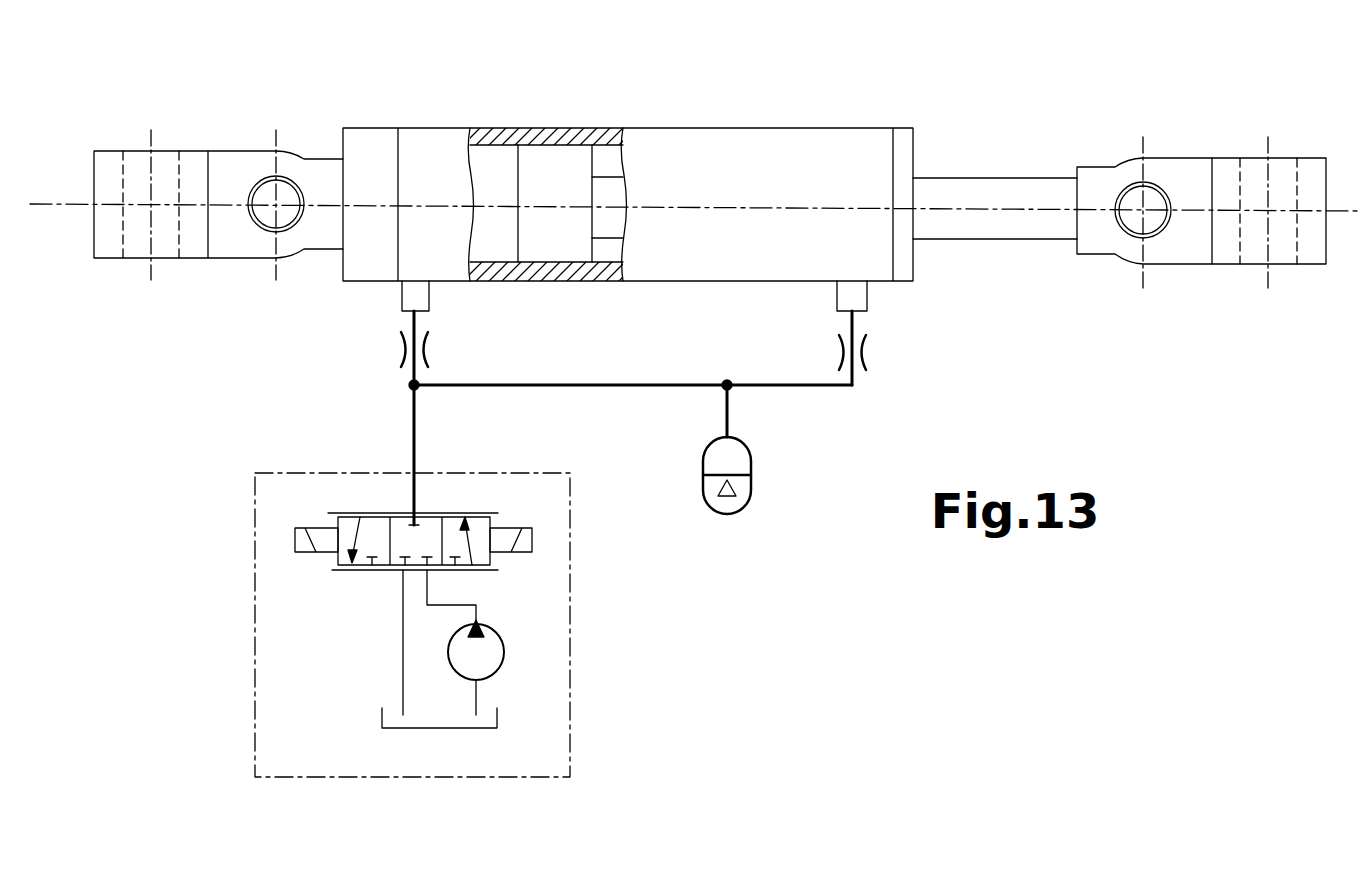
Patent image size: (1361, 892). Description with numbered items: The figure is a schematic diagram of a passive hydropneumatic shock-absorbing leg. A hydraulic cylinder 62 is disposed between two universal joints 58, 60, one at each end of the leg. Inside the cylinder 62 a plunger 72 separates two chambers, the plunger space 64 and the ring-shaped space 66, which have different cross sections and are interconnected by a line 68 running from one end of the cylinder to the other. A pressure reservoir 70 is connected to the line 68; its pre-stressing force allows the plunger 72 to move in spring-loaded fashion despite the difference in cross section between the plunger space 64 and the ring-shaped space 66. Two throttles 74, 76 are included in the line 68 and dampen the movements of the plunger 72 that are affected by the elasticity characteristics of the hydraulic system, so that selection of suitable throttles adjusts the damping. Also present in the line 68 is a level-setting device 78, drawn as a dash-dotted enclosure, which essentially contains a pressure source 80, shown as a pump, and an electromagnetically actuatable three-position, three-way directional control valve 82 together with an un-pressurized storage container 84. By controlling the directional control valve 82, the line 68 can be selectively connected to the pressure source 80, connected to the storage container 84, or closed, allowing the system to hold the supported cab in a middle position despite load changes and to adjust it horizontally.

The universal joint 58 is at (226, 160).
The universal joint 60 is at (1170, 168).
The hydraulic cylinder 62 is at (710, 148).
The plunger space 64 is at (493, 162).
The ring-shaped space 66 is at (611, 156).
The line 68 is at (592, 388).
The pressure reservoir 70 is at (746, 490).
The plunger 72 is at (550, 158).
The throttle 74 is at (370, 359).
The throttle 76 is at (893, 365).
The level-setting device 78 is at (565, 700).
The pressure source 80 is at (503, 650).
The directional control valve 82 is at (398, 520).
The storage container 84 is at (430, 730).